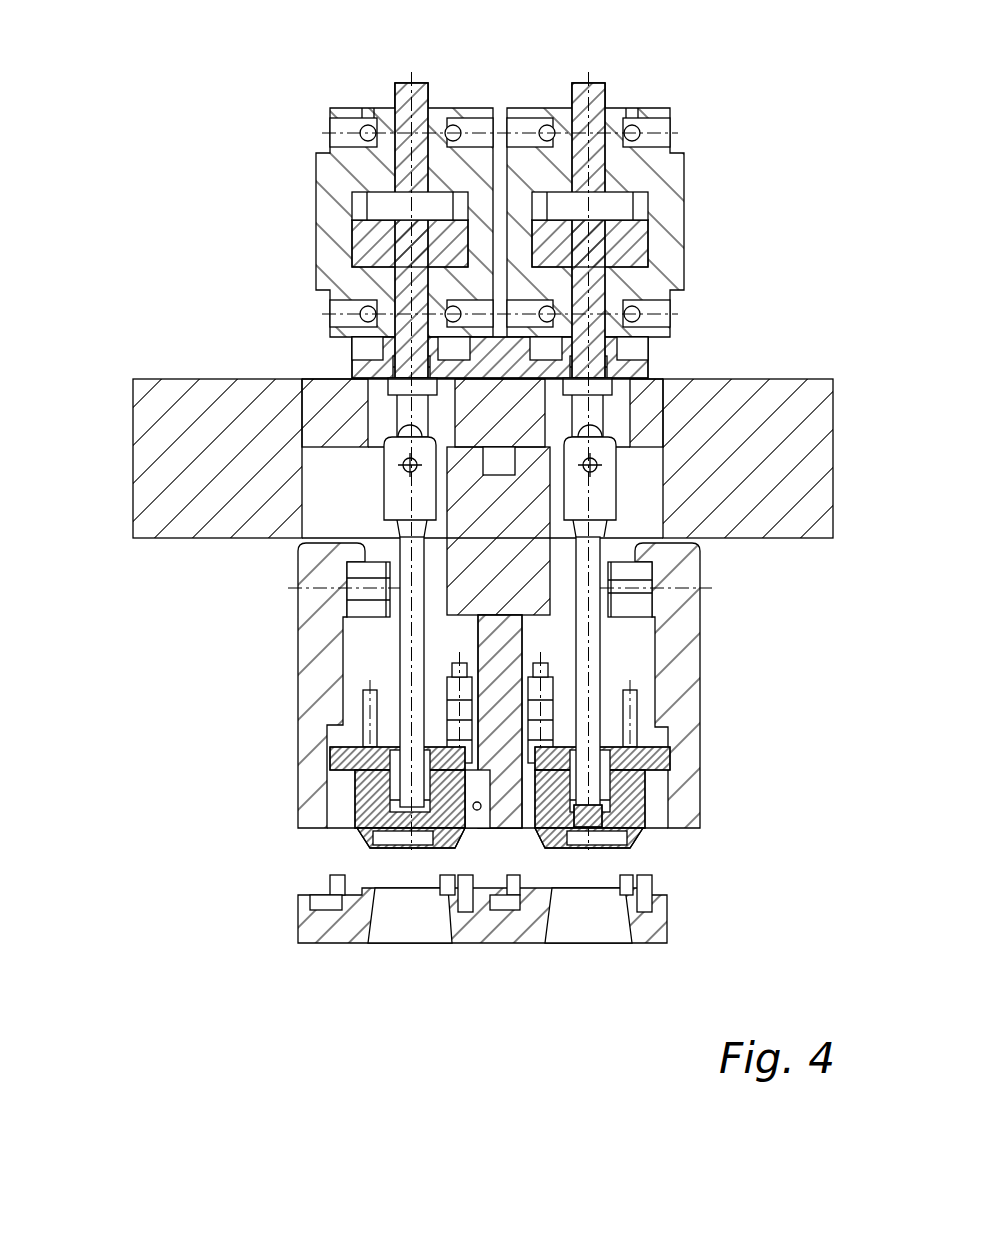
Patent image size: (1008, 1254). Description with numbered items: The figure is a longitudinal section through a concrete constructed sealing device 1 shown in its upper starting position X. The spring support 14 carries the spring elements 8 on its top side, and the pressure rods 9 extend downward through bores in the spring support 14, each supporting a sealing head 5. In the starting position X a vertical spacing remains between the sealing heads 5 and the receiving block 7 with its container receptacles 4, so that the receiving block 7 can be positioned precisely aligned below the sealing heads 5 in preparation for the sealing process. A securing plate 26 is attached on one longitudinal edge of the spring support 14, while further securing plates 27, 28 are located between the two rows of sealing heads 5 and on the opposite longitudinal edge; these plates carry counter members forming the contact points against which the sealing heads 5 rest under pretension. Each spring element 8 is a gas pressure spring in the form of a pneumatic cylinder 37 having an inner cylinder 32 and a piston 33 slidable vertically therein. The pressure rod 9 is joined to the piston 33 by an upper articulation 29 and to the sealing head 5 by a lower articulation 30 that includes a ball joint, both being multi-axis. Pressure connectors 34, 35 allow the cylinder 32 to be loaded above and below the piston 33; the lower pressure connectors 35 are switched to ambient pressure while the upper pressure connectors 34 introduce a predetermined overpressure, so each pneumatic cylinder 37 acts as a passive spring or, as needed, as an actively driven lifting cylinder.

The sealing device 1 is at (214, 232).
The container receptacles 4 is at (411, 920).
The sealing head 5 is at (357, 846).
The receiving block 7 is at (320, 928).
The spring element 8 is at (310, 170).
The pressure rod 9 is at (400, 656).
The spring support 14 is at (785, 388).
The securing plate 26 is at (305, 676).
The securing plate 27 is at (503, 669).
The securing plate 28 is at (698, 723).
The upper articulation 29 is at (596, 468).
The lower articulation 30 is at (586, 815).
The inner cylinder 32 is at (640, 203).
The piston 33 is at (622, 236).
The upper pressure connector 34 is at (662, 128).
The lower pressure connector 35 is at (662, 318).
The pneumatic cylinder 37 is at (560, 108).
The starting position X is at (105, 536).